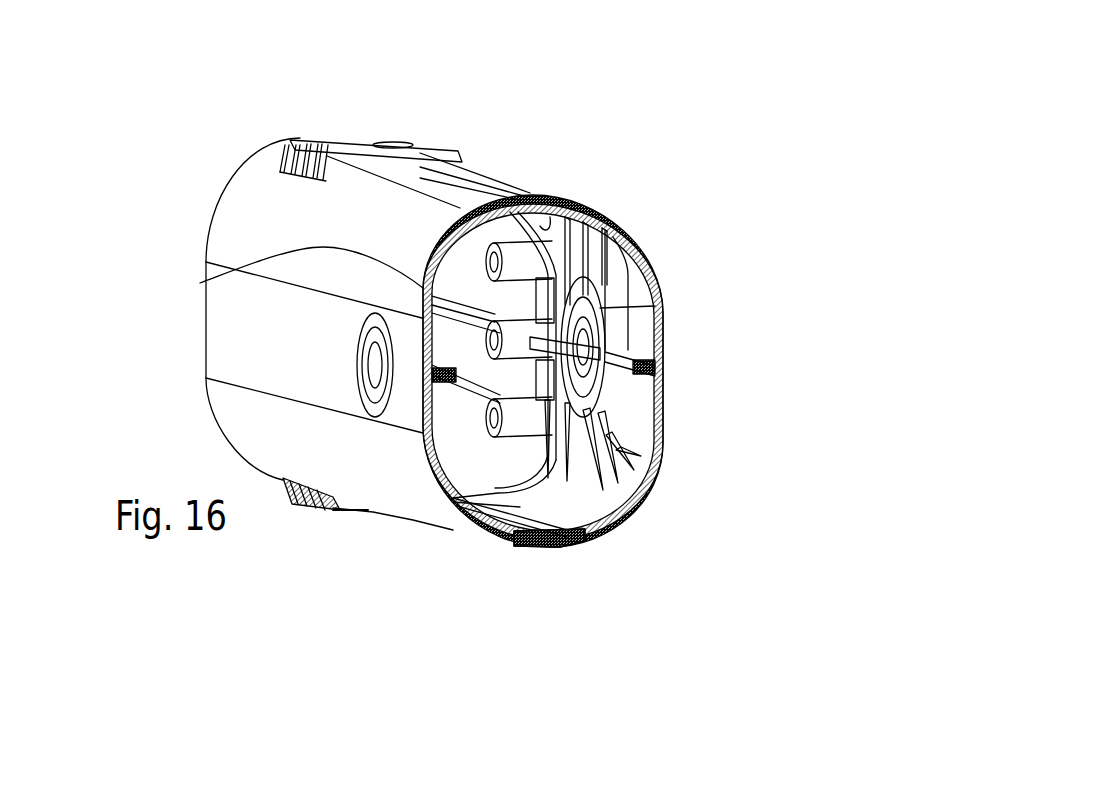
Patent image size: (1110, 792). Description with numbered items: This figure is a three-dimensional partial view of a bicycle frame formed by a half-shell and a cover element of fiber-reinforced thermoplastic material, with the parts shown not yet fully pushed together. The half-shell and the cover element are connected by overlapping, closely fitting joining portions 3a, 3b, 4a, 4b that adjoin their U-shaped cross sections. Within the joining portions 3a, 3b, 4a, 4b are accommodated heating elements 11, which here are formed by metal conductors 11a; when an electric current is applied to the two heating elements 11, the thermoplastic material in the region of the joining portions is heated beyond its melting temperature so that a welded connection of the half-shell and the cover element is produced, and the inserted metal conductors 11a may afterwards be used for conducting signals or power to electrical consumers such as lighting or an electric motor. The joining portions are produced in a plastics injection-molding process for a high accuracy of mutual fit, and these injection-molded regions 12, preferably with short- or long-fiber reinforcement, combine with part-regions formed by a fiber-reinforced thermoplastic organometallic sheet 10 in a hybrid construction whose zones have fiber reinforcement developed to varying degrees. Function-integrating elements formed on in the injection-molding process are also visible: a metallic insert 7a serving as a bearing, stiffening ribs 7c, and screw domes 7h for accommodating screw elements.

The fiber-reinforced thermoplastic organometallic sheet 10 is at (207, 283).
The heating element 11 is at (565, 195).
The metal conductor 11a is at (549, 538).
The injection-molded region 12 is at (515, 187).
The joining portion 3a is at (530, 196).
The joining portion 3b is at (587, 200).
The joining portion 4a is at (521, 498).
The joining portion 4b is at (553, 546).
The metallic insert 7a is at (347, 138).
The stiffening rib 7c is at (332, 142).
The screw dome 7h is at (517, 335).